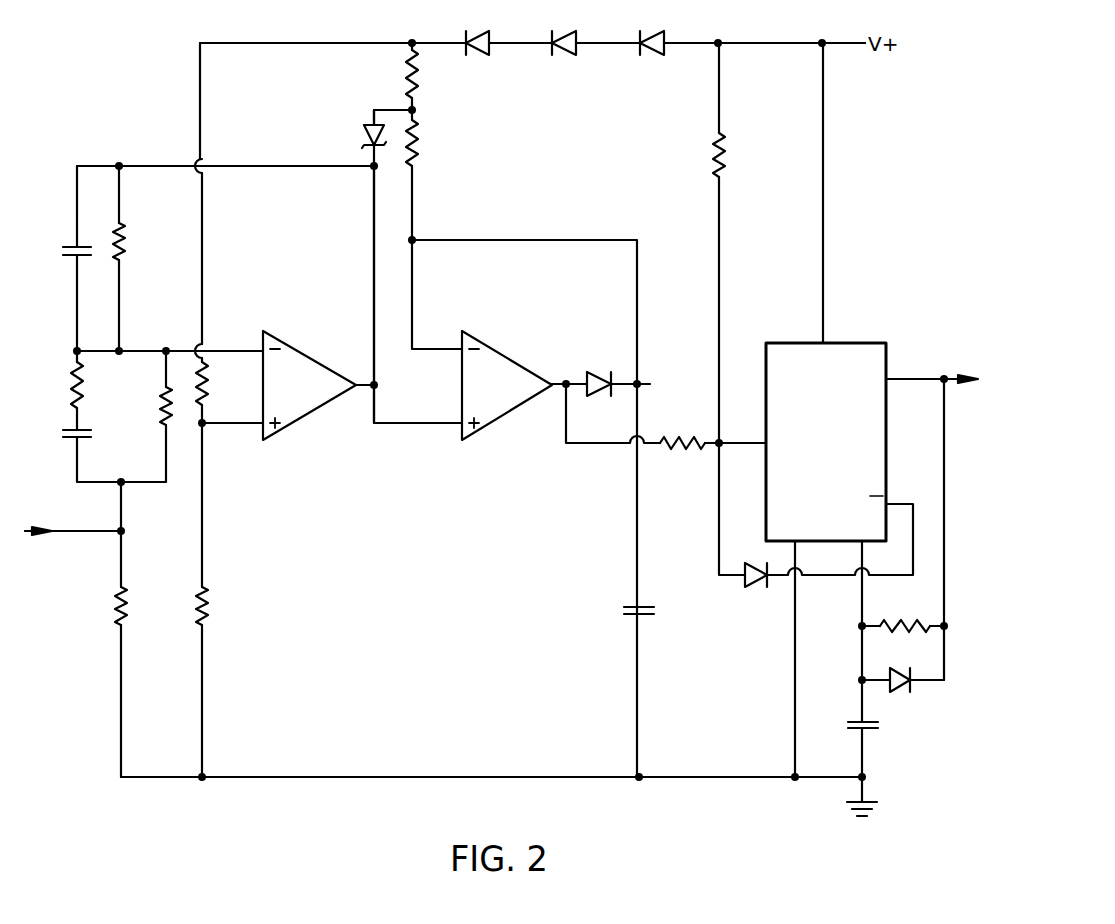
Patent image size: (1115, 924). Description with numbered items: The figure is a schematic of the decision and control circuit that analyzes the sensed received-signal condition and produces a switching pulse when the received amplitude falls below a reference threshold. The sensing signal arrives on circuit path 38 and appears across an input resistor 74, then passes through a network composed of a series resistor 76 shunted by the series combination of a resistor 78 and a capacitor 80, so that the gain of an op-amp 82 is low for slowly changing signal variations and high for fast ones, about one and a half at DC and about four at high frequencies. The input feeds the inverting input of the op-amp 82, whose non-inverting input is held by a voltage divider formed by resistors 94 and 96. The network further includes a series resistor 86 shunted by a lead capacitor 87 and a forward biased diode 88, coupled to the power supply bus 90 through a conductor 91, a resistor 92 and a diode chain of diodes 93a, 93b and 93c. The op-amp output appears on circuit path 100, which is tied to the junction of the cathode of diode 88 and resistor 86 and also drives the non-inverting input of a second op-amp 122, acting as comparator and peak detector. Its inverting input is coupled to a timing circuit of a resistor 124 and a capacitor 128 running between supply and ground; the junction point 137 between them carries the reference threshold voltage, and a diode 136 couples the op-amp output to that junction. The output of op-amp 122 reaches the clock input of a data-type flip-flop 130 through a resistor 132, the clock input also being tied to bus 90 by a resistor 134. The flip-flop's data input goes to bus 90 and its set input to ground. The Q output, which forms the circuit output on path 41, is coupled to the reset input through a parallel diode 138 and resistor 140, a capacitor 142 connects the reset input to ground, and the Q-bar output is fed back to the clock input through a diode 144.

The circuit path 38 is at (88, 533).
The path 41 is at (950, 378).
The input resistor 74 is at (130, 606).
The series resistor 76 is at (159, 404).
The resistor 78 is at (72, 380).
The capacitor 80 is at (70, 440).
The op-amp 82 is at (284, 428).
The series resistor 86 is at (128, 248).
The lead capacitor 87 is at (70, 247).
The forward biased diode 88 is at (364, 136).
The bus 90 is at (748, 45).
The conductor 91 is at (394, 108).
The resistor 92 is at (422, 72).
The diode 93a is at (478, 55).
The diode 93b is at (564, 55).
The diode 93c is at (652, 55).
The resistor 94 is at (208, 380).
The resistor 96 is at (211, 606).
The circuit path 100 is at (372, 283).
The op-amp 122 is at (482, 423).
The resistor 124 is at (420, 143).
The capacitor 128 is at (630, 618).
The data-type flip-flop 130 is at (794, 342).
The resistor 132 is at (683, 450).
The resistor 134 is at (726, 157).
The diode 136 is at (590, 371).
The junction point 137 is at (640, 384).
The diode 138 is at (900, 690).
The resistor 140 is at (915, 620).
The capacitor 142 is at (850, 720).
The diode 144 is at (755, 587).